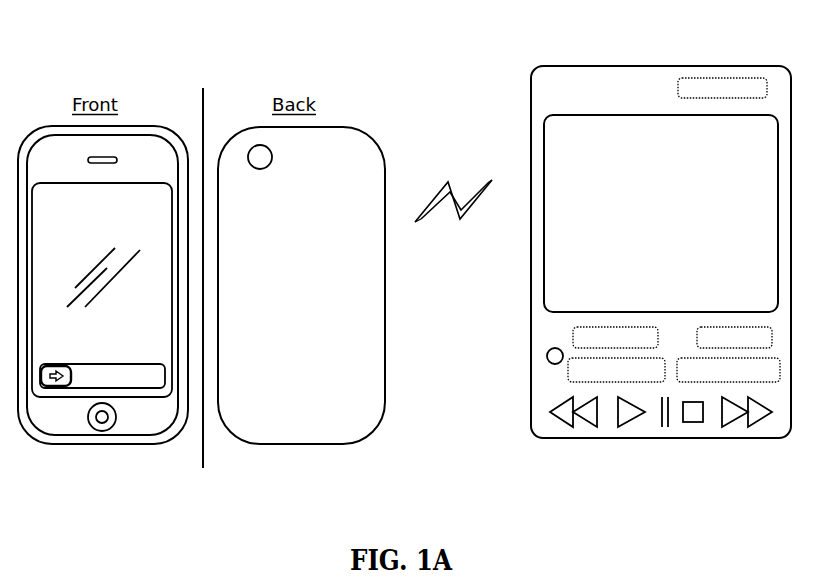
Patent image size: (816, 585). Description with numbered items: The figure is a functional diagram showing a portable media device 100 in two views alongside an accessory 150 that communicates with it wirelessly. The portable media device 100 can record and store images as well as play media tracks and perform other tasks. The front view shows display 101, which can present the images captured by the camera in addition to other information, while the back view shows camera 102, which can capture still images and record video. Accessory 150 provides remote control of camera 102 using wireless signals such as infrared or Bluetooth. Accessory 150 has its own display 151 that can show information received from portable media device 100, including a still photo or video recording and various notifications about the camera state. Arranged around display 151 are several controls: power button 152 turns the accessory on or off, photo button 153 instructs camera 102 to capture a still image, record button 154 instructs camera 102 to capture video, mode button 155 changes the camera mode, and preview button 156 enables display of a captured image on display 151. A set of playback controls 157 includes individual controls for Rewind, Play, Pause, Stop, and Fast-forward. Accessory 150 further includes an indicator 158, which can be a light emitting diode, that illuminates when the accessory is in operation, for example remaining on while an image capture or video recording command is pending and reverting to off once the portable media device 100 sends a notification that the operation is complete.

The portable media device 100 is at (110, 444).
The display 101 is at (62, 183).
The camera 102 is at (262, 169).
The accessory 150 is at (584, 66).
The display 151 is at (545, 270).
The power button 152 is at (720, 78).
The photo button 153 is at (576, 329).
The record button 154 is at (612, 382).
The mode button 155 is at (736, 327).
The preview button 156 is at (708, 382).
The playback controls 157 is at (645, 422).
The indicator 158 is at (553, 364).